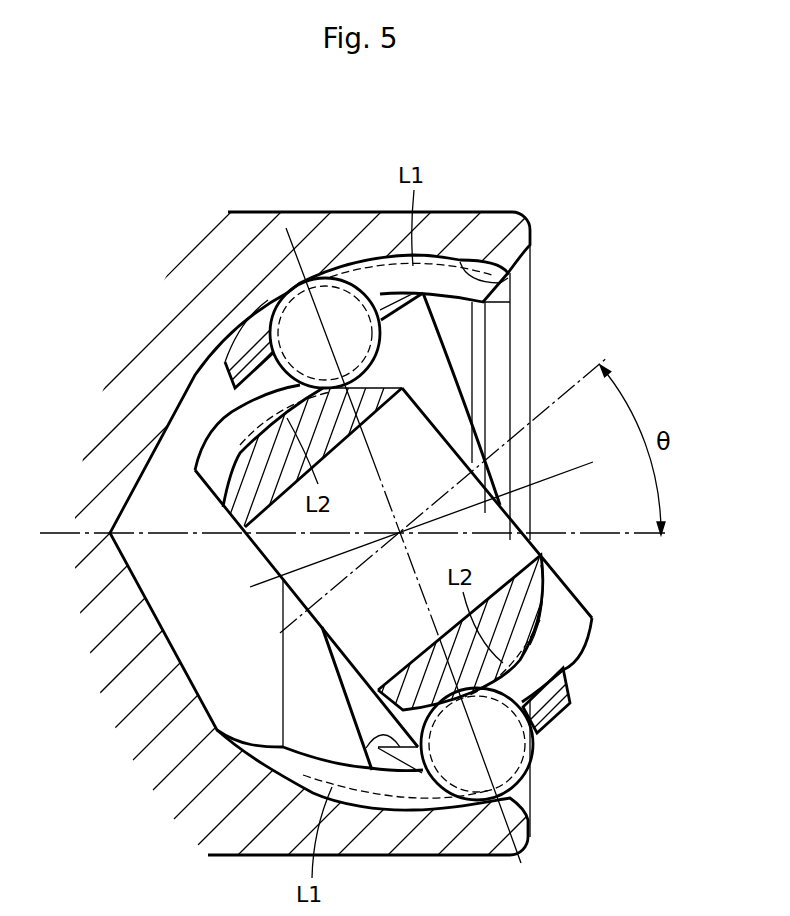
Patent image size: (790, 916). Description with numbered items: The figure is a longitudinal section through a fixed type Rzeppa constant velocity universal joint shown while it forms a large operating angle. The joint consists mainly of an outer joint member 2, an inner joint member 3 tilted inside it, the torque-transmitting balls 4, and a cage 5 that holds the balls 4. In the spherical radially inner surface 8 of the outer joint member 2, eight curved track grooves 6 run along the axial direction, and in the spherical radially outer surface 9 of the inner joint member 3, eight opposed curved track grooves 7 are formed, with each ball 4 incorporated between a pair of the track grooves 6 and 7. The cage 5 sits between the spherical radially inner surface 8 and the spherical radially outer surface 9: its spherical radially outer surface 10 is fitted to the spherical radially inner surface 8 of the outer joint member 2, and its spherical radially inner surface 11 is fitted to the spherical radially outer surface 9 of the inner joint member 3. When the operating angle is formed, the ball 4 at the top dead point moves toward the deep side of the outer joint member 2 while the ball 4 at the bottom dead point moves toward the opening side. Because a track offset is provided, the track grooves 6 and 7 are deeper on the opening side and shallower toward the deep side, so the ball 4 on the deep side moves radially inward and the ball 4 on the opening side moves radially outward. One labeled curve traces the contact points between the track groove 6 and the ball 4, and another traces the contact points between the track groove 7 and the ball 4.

The outer joint member 2 is at (457, 210).
The inner joint member 3 is at (574, 578).
The balls 4 is at (330, 305).
The cage 5 is at (572, 712).
The track grooves of the outer joint member 6 is at (508, 278).
The track grooves of the inner joint member 7 is at (547, 600).
The spherical radially inner surface of the outer joint member 8 is at (450, 300).
The spherical radially outer surface of the inner joint member 9 is at (578, 663).
The spherical radially outer surface of the cage 10 is at (407, 768).
The spherical radially inner surface of the cage 11 is at (373, 745).